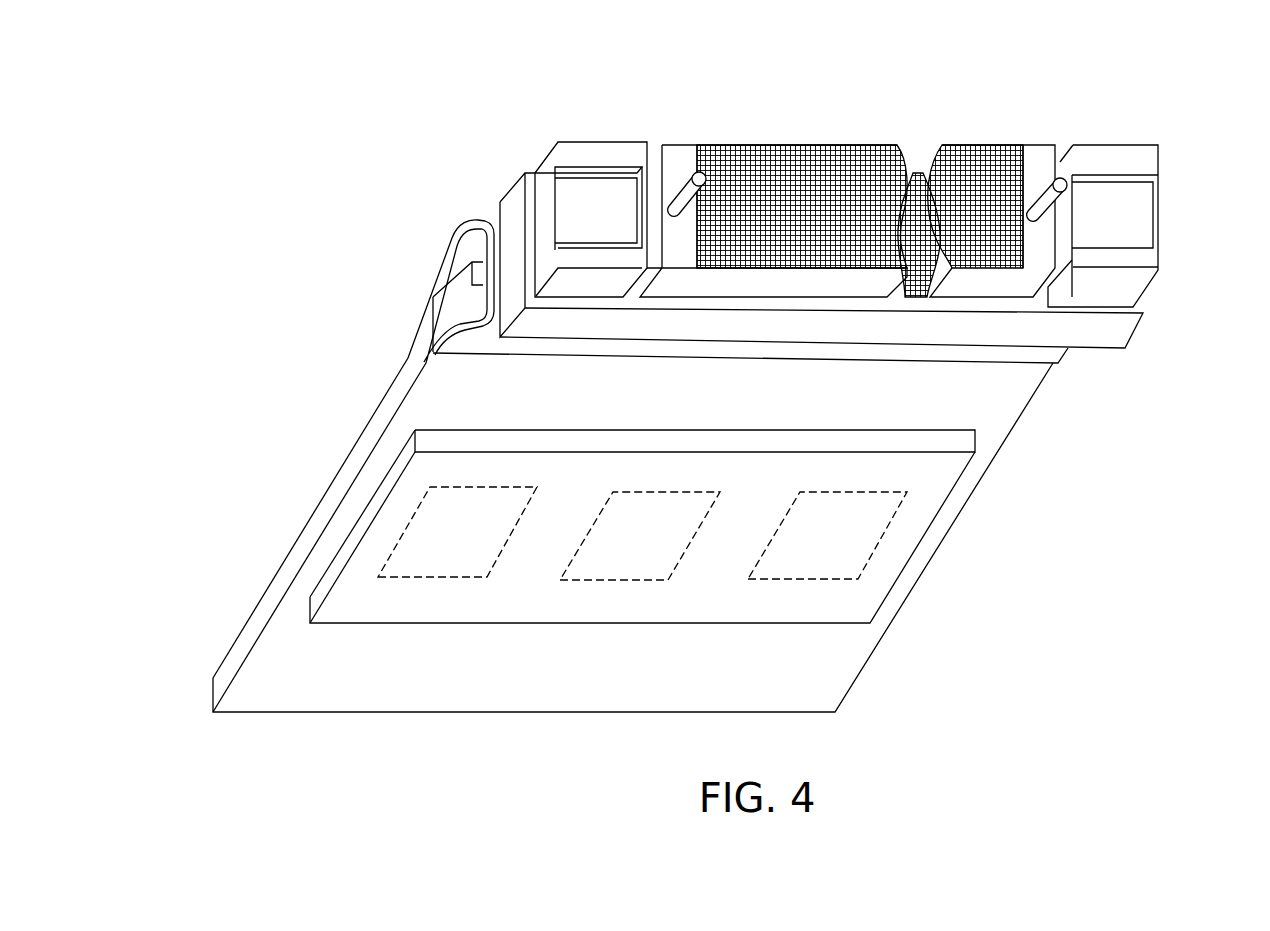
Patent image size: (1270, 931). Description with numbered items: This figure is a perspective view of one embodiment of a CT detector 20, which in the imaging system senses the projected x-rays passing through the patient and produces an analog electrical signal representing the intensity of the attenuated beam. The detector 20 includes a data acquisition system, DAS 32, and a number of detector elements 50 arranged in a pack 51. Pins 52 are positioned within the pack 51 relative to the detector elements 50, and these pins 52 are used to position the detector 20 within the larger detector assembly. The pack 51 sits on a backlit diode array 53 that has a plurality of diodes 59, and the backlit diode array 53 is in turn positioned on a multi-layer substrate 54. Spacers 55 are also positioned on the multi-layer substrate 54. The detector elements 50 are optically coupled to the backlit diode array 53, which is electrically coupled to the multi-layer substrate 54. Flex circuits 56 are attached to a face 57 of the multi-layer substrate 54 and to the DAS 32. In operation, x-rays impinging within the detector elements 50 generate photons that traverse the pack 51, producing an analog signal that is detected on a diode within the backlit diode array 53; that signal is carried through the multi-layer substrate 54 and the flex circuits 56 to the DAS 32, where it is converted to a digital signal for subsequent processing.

The detector 20 is at (1103, 105).
The data acquisition system 32 is at (953, 503).
The detector elements 50 is at (768, 145).
The pack 51 is at (705, 118).
The pins 52 is at (677, 173).
The backlit diode array 53 is at (1023, 300).
The multi-layer substrate 54 is at (1122, 333).
The spacers 55 is at (597, 150).
The flex circuits 56 is at (462, 327).
The face 57 is at (511, 218).
The diodes 59 is at (919, 172).